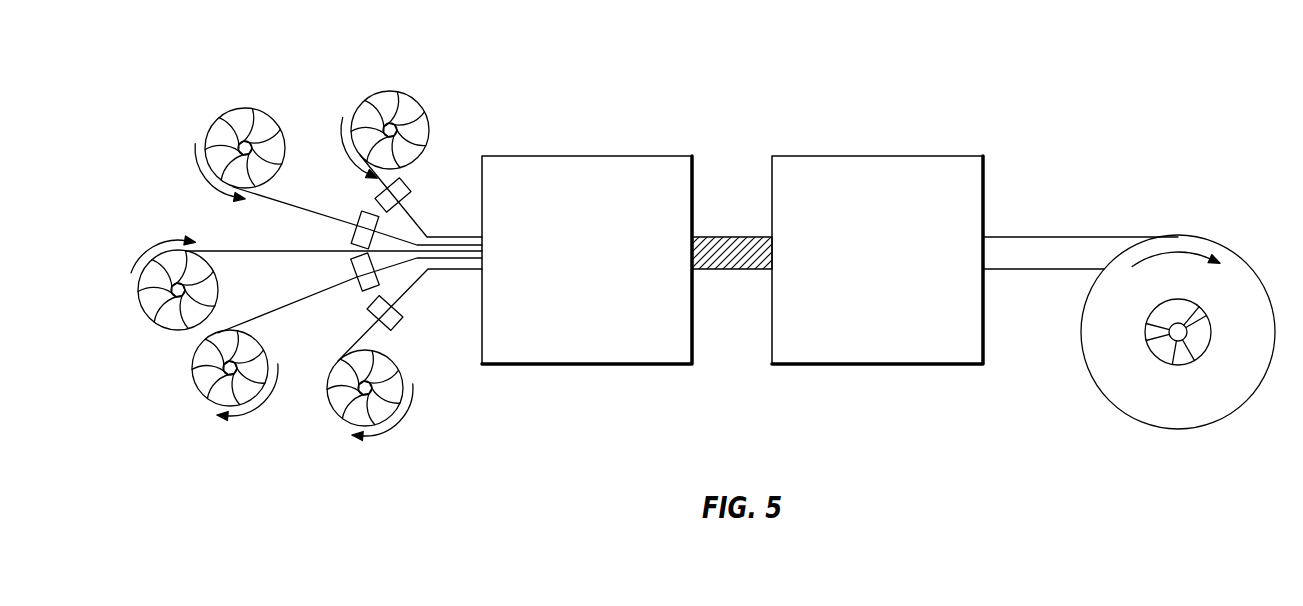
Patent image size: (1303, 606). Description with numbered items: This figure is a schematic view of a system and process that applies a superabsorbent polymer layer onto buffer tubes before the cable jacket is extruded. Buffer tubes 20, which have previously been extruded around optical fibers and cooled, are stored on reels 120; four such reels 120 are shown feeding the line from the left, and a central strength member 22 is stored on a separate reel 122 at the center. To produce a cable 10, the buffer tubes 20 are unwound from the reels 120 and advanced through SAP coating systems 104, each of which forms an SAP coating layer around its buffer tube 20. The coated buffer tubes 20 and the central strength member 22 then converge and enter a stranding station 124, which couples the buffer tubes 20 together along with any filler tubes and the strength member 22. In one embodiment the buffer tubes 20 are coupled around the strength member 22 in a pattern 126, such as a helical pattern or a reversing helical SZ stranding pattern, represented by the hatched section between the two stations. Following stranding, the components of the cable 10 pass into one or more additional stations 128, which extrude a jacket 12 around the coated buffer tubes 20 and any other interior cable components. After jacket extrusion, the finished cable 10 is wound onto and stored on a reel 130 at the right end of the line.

The cable 10 is at (1103, 236).
The jacket 12 is at (1046, 250).
The buffer tubes 20 is at (305, 208).
The central strength member 22 is at (218, 250).
The SAP coating systems 104 is at (380, 197).
The reels 120 is at (249, 109).
The reel 122 is at (144, 313).
The stranding station 124 is at (657, 215).
The pattern 126 is at (718, 272).
The additional stations 128 is at (960, 213).
The reel 130 is at (1226, 297).